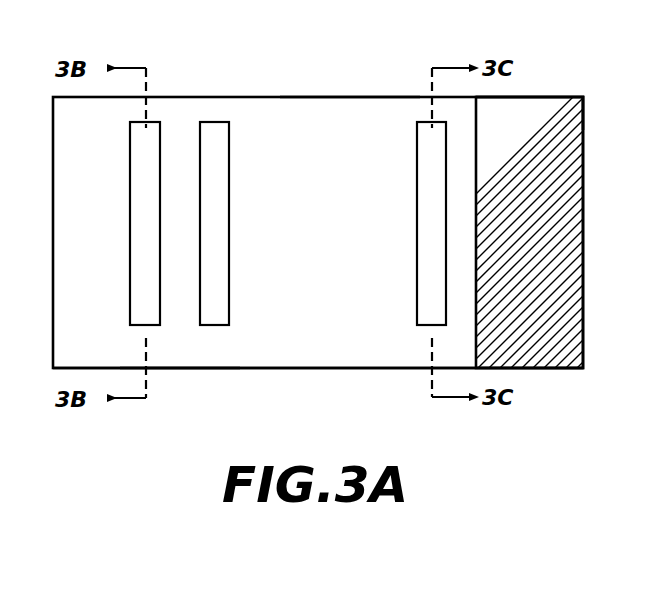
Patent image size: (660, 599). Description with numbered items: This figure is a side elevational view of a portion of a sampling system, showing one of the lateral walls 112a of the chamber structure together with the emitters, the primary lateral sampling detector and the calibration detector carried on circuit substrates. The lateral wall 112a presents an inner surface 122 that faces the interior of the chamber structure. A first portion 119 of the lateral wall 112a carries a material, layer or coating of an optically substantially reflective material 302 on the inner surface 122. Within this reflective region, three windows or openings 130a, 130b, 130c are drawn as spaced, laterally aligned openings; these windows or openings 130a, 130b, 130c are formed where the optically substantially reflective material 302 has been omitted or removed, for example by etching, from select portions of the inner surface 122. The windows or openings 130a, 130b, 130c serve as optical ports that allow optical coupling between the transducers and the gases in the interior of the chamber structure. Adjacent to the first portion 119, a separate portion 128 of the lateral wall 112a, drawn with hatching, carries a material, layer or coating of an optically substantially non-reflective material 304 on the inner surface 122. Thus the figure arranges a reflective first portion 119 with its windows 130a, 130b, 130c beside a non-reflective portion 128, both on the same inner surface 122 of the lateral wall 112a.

The inner surface 122 is at (334, 239).
The lateral wall 112a is at (283, 368).
The first portion 119 is at (178, 353).
The optically substantially reflective material 302 is at (318, 133).
The window 130a is at (163, 133).
The window 130b is at (417, 135).
The window 130c is at (233, 133).
The portion 128 is at (552, 241).
The optically substantially non-reflective material 304 is at (550, 112).